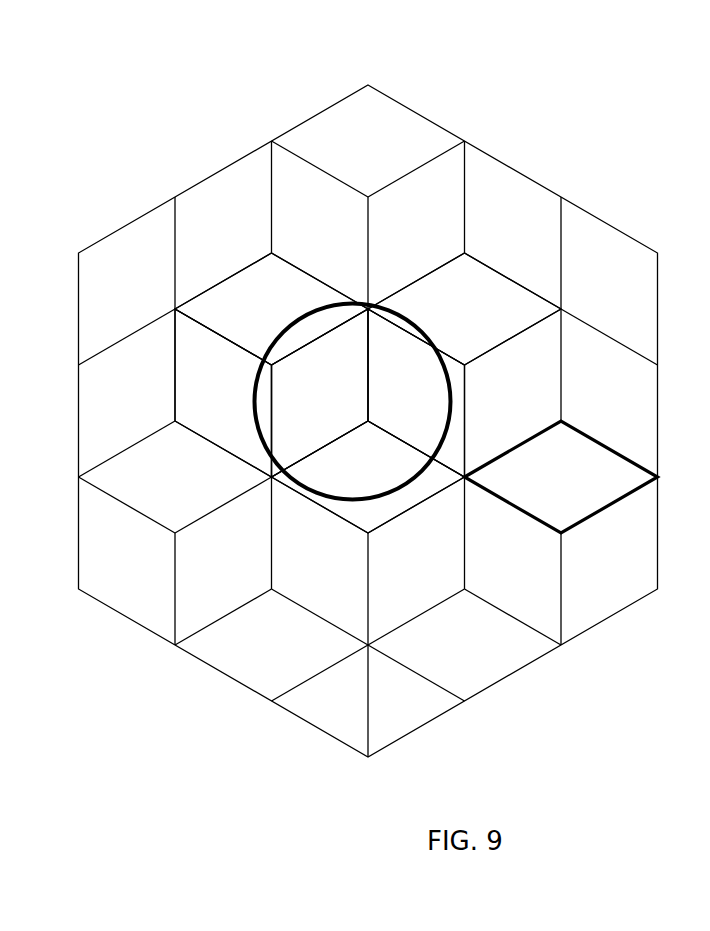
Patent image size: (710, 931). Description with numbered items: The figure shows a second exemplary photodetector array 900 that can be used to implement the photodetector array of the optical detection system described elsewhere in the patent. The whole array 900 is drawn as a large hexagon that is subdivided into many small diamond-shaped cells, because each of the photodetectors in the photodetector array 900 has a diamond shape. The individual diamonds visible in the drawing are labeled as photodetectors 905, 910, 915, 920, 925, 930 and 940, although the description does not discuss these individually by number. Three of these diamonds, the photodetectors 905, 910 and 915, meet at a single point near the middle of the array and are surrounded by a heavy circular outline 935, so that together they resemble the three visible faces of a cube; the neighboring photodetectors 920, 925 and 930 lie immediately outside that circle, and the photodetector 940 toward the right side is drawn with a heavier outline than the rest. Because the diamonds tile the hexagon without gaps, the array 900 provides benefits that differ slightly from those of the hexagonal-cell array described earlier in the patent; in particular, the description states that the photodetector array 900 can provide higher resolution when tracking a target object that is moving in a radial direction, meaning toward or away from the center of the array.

The photodetector array 900 is at (608, 99).
The first face of center cell 905 is at (303, 400).
The second face of center cell 910 is at (398, 400).
The third face of center cell 915 is at (350, 484).
The adjacent cell face 920 is at (256, 318).
The adjacent cell face 925 is at (206, 402).
The adjacent cell face 930 is at (471, 318).
The circular region outlining center cell 935 is at (406, 322).
The highlighted cell face 940 is at (543, 488).